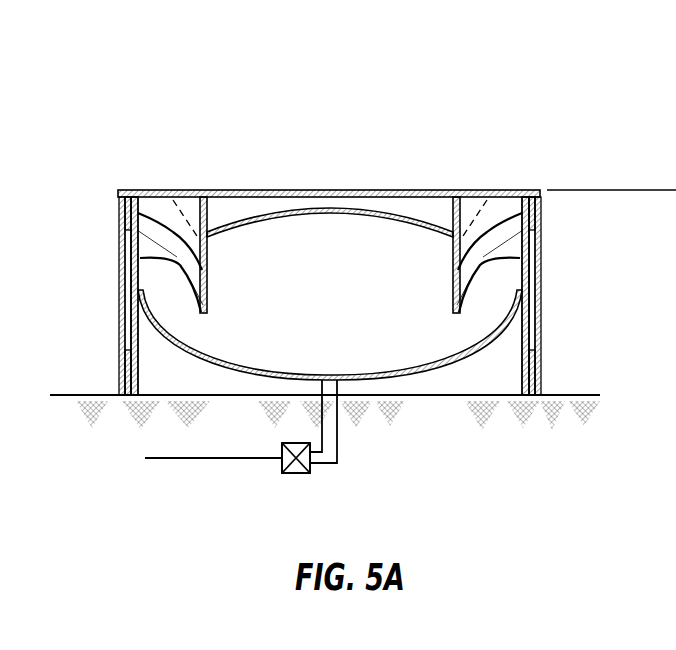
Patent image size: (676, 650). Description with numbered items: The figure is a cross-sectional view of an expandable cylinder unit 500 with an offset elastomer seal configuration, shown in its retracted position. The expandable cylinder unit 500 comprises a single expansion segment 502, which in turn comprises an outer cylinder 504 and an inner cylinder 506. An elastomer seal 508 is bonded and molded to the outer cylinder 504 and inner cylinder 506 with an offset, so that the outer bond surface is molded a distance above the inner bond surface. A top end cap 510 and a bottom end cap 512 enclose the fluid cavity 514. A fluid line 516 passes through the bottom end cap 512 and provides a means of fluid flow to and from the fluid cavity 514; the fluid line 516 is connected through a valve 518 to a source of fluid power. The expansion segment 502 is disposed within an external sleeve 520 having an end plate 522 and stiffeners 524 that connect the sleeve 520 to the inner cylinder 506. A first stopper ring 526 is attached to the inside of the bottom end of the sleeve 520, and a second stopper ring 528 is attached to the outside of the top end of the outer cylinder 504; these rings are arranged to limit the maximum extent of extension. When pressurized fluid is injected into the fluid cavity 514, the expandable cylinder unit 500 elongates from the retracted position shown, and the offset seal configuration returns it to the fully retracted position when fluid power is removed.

The expandable cylinder unit 500 is at (150, 124).
The expansion segment 502 is at (557, 195).
The outer cylinder 504 is at (130, 347).
The inner cylinder 506 is at (330, 228).
The elastomer seal 508 is at (127, 260).
The top end cap 510 is at (335, 191).
The bottom end cap 512 is at (420, 372).
The fluid cavity 514 is at (363, 312).
The fluid line 516 is at (281, 432).
The valve 518 is at (330, 482).
The external sleeve 520 is at (122, 293).
The end plate 522 is at (344, 171).
The stiffeners 524 is at (330, 172).
The first stopper ring 526 is at (125, 373).
The second stopper ring 528 is at (122, 210).